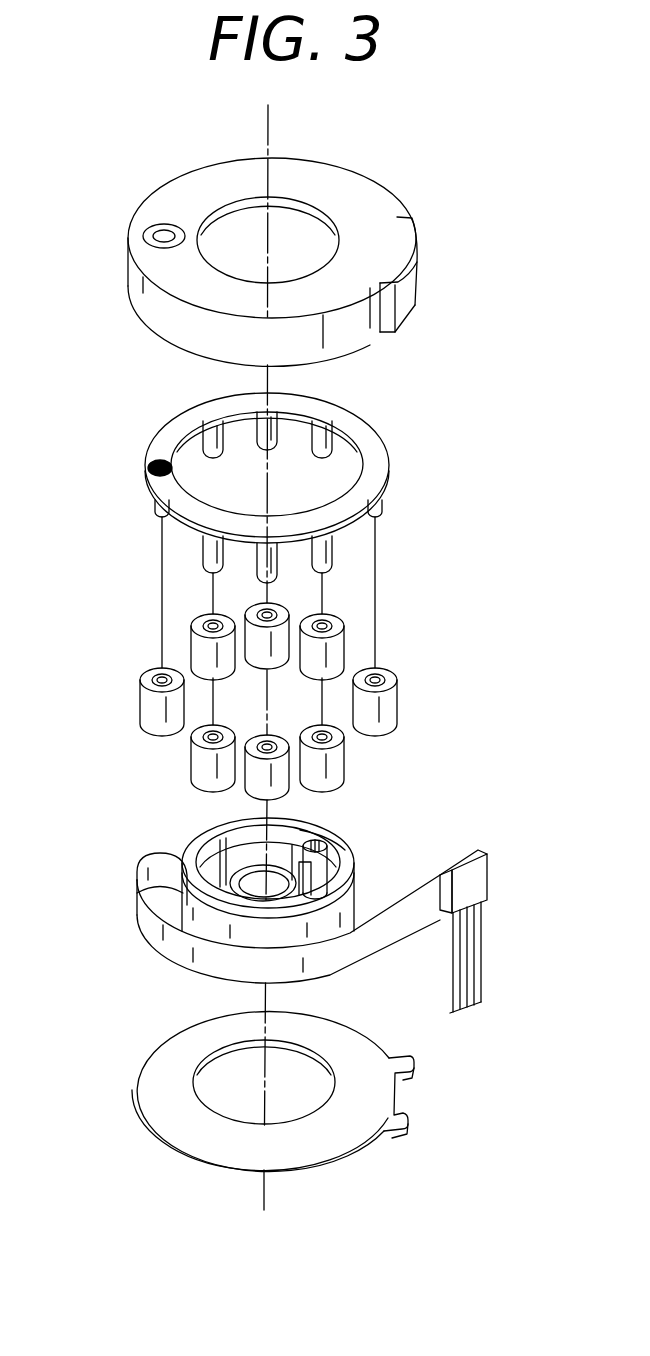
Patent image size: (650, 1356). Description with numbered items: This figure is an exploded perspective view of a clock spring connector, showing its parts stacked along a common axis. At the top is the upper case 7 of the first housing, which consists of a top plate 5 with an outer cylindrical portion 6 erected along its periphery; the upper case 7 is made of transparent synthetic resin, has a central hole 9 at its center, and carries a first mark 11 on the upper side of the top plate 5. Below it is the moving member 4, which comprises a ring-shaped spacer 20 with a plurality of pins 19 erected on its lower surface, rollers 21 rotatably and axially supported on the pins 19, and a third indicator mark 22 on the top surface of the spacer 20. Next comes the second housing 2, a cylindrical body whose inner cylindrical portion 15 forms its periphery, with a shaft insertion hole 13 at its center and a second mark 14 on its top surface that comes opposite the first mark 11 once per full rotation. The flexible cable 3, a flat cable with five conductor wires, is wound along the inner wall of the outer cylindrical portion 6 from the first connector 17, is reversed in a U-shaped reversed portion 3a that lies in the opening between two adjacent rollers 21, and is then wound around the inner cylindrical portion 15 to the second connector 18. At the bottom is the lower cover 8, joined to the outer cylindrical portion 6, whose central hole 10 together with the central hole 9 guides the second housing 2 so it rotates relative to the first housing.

The second housing 2 is at (336, 833).
The flexible cable 3 is at (306, 894).
The reversed portion 3a is at (137, 880).
The moving member 4 is at (278, 596).
The top plate 5 is at (160, 266).
The outer cylindrical portion 6 is at (152, 310).
The upper case 7 is at (222, 240).
The lower cover 8 is at (267, 1097).
The central hole 9 is at (297, 228).
The central hole 10 is at (315, 1088).
The first mark 11 is at (153, 222).
The shaft insertion hole 13 is at (255, 878).
The second mark 14 is at (222, 868).
The inner cylindrical portion 15 is at (330, 860).
The first connector 17 is at (487, 871).
The second connector 18 is at (340, 848).
The pins 19 is at (205, 547).
The spacer 20 is at (377, 480).
The rollers 21 is at (340, 640).
The third indicator mark 22 is at (148, 464).